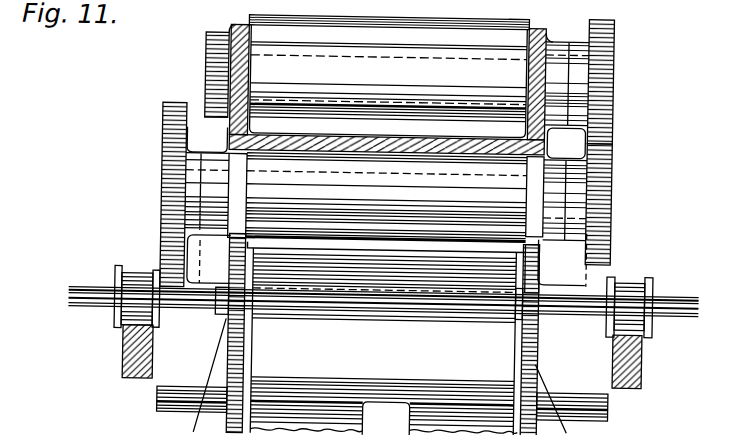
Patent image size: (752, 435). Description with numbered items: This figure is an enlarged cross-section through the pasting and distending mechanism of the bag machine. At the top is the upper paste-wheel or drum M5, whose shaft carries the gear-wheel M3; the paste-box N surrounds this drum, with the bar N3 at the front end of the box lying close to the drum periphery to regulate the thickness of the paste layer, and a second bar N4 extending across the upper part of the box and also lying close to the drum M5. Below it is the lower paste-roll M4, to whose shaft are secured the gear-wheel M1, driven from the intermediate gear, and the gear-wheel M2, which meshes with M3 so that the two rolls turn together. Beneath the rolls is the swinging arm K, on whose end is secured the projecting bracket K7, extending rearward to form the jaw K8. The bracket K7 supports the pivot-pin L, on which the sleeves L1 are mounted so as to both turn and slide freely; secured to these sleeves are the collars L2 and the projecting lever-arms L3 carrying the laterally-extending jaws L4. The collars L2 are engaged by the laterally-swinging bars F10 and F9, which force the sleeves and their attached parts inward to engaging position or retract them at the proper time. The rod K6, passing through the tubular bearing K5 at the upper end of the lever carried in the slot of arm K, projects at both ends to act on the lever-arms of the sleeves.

The paste-box N is at (540, 32).
The bar N3 is at (387, 115).
The bar N4 is at (389, 32).
The upper paste-wheel M5 is at (388, 81).
The gear-wheel M3 is at (607, 93).
The gear-wheel M2 is at (608, 202).
The gear-wheel M1 is at (171, 176).
The lower paste-roll M4 is at (365, 185).
The laterally-extending jaws L4 is at (295, 238).
The projecting lever-arms L3 is at (233, 247).
The collars L2 is at (122, 279).
The pivot-pin L is at (86, 290).
The sleeves L1 is at (217, 301).
The jaw K8 is at (540, 265).
The projecting bracket K7 is at (382, 334).
The rod K6 is at (182, 396).
The tubular bearing K5 is at (300, 409).
The swinging arm K is at (386, 418).
The longitudinally-extending bar F10 is at (125, 351).
The longitudinally-extending bar F9 is at (642, 343).